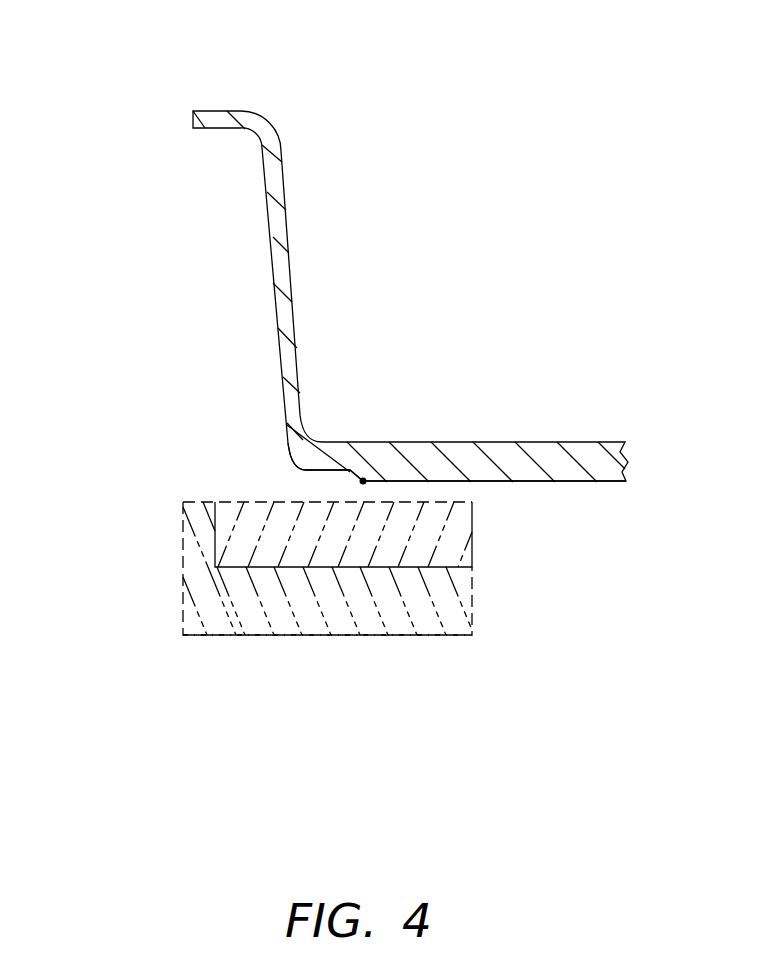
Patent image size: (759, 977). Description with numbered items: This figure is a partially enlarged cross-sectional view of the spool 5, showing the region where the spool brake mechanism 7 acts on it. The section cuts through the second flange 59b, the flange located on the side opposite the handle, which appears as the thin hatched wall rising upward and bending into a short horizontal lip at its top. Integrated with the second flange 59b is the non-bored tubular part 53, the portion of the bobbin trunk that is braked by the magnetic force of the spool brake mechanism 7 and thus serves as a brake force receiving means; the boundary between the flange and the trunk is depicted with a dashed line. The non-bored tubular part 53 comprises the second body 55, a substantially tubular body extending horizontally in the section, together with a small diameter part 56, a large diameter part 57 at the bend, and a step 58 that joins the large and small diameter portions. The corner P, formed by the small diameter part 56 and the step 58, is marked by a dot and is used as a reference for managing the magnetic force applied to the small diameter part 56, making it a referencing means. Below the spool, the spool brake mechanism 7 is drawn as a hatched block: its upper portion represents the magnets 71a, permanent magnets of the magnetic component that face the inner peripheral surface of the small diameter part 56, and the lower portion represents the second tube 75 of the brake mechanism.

The spool 5 is at (152, 95).
The second flange 59b is at (282, 227).
The non-bored tubular part 53 is at (390, 400).
The second body 55 is at (465, 457).
The large diameter part 57 is at (317, 473).
The small diameter part 56 is at (447, 482).
The corner P is at (363, 481).
The step 58 is at (343, 480).
The magnets 71a is at (453, 533).
The second tube 75 is at (245, 623).
The spool brake mechanism 7 is at (168, 698).